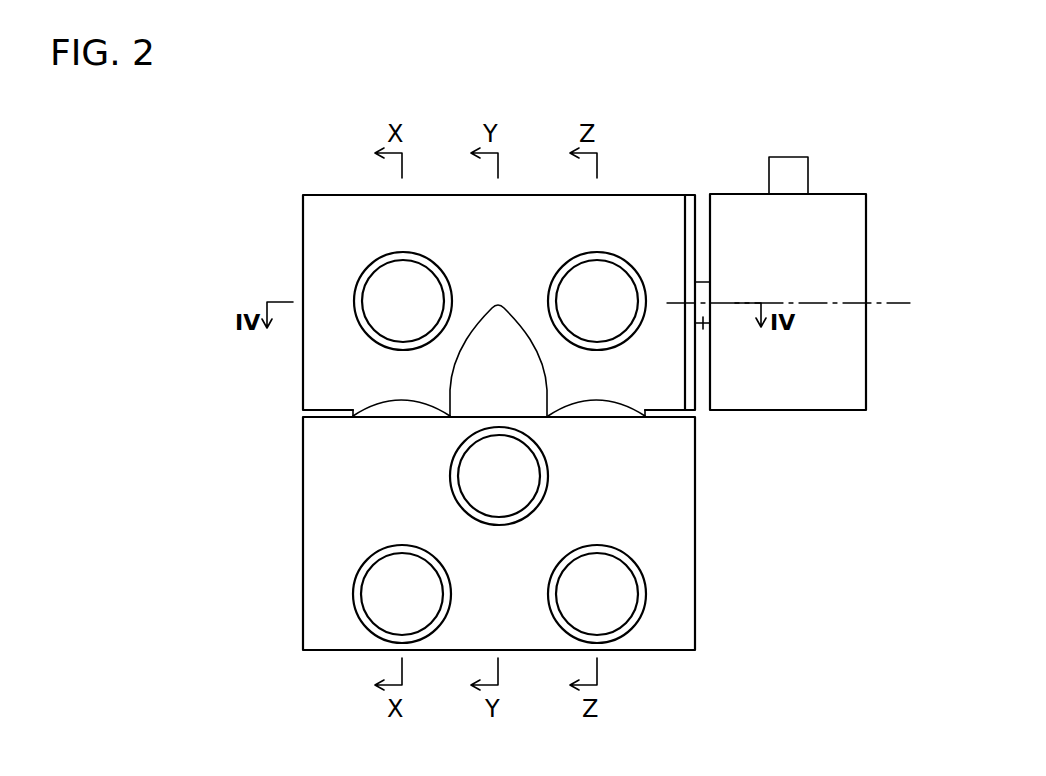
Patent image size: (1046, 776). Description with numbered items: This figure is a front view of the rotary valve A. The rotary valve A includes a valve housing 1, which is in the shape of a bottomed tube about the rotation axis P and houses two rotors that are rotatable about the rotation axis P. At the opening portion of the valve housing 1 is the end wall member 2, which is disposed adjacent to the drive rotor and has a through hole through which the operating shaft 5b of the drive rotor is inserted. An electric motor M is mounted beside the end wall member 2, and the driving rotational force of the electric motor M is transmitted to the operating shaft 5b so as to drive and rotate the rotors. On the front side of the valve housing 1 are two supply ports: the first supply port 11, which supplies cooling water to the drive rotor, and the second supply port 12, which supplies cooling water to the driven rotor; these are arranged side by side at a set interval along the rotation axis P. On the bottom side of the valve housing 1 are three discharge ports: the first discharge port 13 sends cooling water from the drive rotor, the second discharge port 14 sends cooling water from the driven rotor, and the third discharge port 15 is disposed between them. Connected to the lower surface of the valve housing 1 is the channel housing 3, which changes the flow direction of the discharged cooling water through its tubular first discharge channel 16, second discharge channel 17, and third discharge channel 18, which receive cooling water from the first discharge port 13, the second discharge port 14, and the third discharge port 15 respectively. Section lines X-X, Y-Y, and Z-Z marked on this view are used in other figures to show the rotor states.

The rotary valve A is at (261, 176).
The valve housing 1 is at (292, 270).
The end wall member 2 is at (698, 222).
The channel housing 3 is at (709, 535).
The operating shaft 5b is at (703, 328).
The first supply port 11 is at (645, 300).
The second supply port 12 is at (354, 299).
The first discharge port 13 is at (597, 408).
The second discharge port 14 is at (380, 415).
The third discharge port 15 is at (462, 380).
The first discharge channel 16 is at (598, 546).
The second discharge channel 17 is at (377, 550).
The third discharge channel 18 is at (450, 473).
The electric motor M is at (855, 234).
The rotation axis P is at (799, 304).